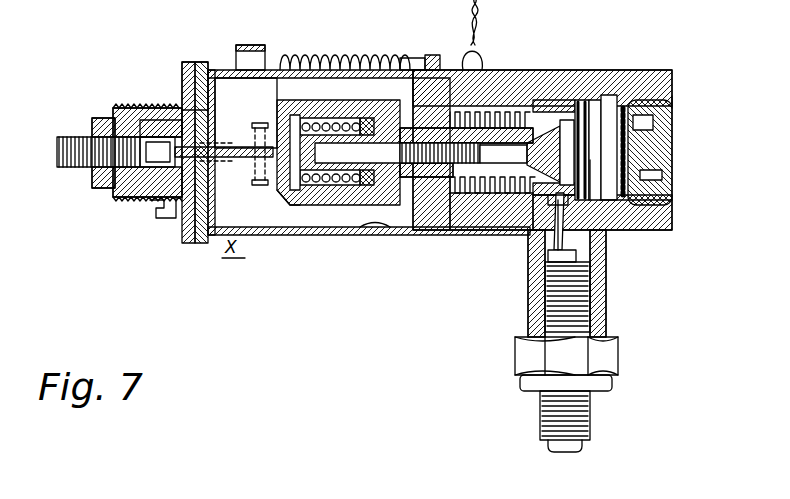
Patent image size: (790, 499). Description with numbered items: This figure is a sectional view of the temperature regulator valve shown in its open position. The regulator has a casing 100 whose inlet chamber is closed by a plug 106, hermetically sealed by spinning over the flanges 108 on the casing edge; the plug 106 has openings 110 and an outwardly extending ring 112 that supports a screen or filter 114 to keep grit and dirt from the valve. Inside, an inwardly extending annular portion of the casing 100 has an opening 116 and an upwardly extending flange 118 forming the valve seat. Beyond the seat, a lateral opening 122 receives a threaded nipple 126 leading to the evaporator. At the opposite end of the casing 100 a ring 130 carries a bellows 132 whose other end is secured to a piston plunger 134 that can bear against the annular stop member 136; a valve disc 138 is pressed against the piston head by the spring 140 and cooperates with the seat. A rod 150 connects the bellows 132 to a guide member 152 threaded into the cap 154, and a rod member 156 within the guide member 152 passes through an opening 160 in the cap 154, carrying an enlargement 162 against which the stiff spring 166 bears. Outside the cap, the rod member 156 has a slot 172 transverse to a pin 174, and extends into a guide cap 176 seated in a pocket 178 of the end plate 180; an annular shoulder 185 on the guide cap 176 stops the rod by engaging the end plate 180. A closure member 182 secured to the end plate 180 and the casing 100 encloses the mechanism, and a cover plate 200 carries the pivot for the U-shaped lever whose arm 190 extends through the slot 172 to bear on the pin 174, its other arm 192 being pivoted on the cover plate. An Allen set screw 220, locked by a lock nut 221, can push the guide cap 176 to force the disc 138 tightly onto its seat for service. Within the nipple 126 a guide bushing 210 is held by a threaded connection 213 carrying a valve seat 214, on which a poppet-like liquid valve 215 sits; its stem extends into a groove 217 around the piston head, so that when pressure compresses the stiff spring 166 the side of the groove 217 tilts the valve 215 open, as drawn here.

The casing 100 is at (630, 84).
The plug 106 is at (670, 141).
The flanges 108 is at (673, 103).
The openings 110 is at (641, 178).
The ring 112 is at (630, 112).
The screen or filter 114 is at (606, 125).
The opening 116 is at (615, 176).
The flange 118 is at (596, 125).
The opening 122 is at (575, 228).
The nipple 126 is at (528, 296).
The ring 130 is at (486, 156).
The bellows 132 is at (465, 114).
The piston plunger 134 is at (555, 114).
The annular stop member 136 is at (477, 209).
The valve disc 138 is at (582, 110).
The spring 140 is at (597, 162).
The rod 150 is at (480, 217).
The guide member 152 is at (390, 165).
The cap 154 is at (325, 207).
The rod member 156 is at (348, 160).
The opening 160 is at (283, 192).
The enlargement 162 is at (298, 118).
The stiff spring 166 is at (338, 123).
The slot 172 is at (197, 157).
The pin 174 is at (260, 123).
The guide cap 176 is at (155, 135).
The pocket 178 is at (128, 192).
The end plate 180 is at (200, 62).
The closure member 182 is at (287, 232).
The annular shoulder 185 is at (207, 188).
The arm 190 is at (239, 147).
The other arm 192 is at (247, 46).
The cover plate 200 is at (186, 84).
The guide bushing 210 is at (555, 253).
The threaded connection 213 is at (530, 355).
The valve seat 214 is at (598, 280).
The liquid valve 215 is at (592, 258).
The groove 217 is at (548, 226).
The Allen set screw 220 is at (56, 153).
The lock nut 221 is at (97, 188).